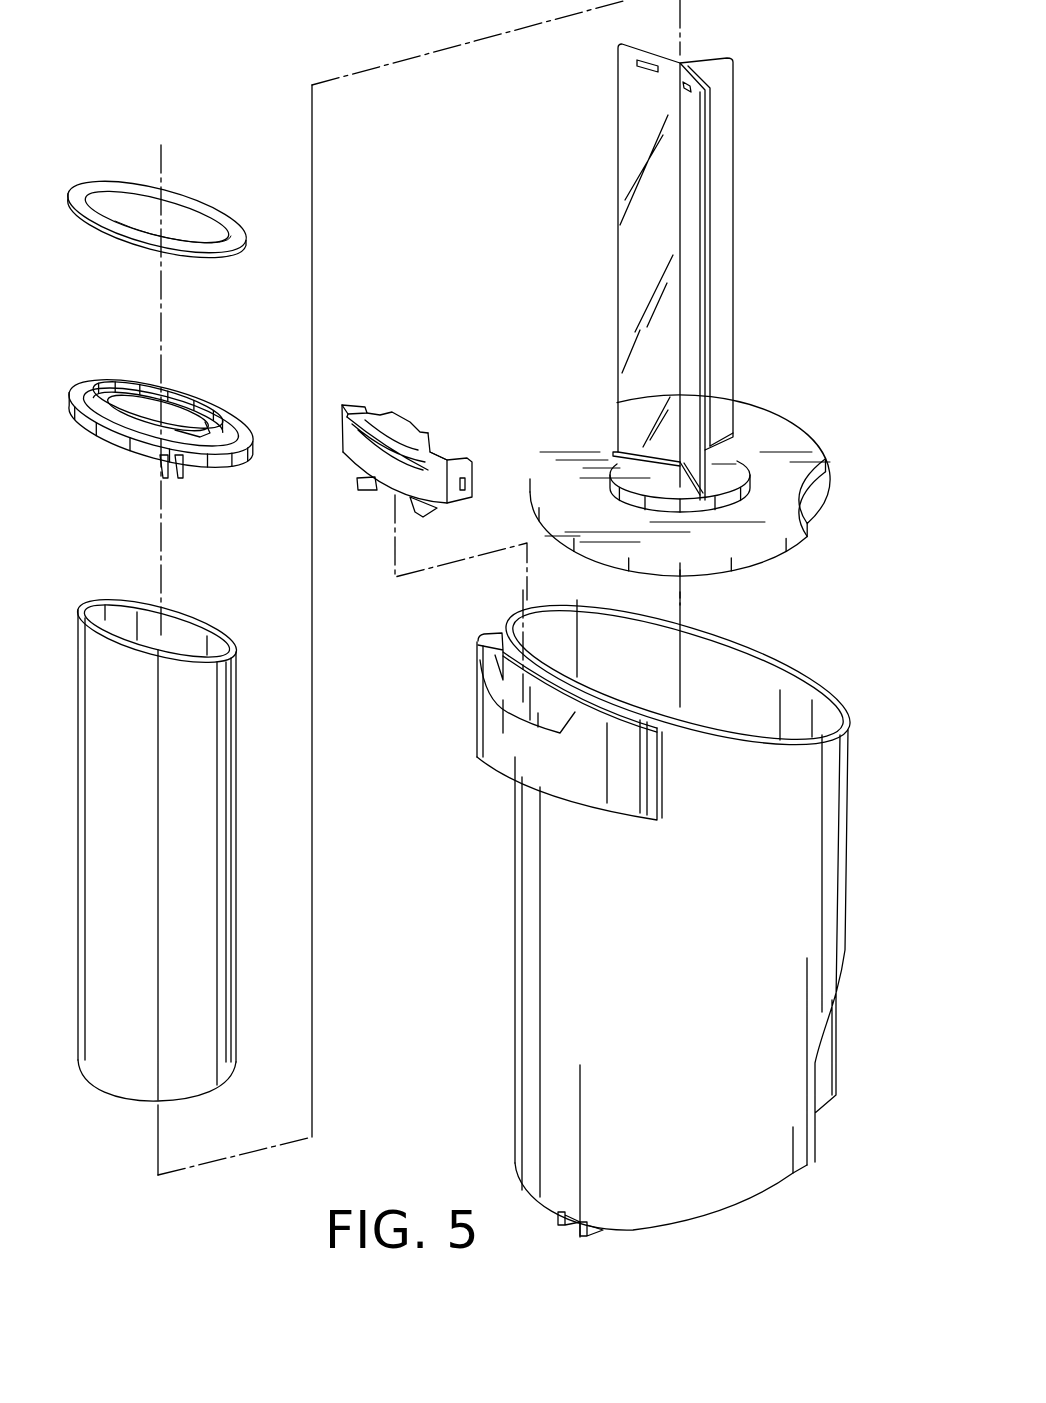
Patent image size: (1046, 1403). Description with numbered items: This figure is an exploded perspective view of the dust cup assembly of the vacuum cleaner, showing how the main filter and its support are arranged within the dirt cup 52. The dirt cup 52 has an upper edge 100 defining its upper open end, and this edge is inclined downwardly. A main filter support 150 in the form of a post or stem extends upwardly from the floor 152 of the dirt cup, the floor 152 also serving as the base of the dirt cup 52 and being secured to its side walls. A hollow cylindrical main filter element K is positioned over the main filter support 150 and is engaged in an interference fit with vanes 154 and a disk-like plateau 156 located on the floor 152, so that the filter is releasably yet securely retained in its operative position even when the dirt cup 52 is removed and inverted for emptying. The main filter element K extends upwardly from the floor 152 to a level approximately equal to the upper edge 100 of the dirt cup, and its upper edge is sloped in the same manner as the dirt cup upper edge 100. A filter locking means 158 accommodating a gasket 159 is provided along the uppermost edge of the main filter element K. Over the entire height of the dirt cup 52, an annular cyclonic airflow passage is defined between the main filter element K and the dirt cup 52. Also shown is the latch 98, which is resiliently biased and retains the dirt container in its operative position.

The gasket 159 is at (196, 198).
The filter locking means 158 is at (195, 395).
The main filter element K is at (240, 654).
The latch 98 is at (402, 473).
The vanes 154 is at (647, 252).
The main filter support 150 is at (715, 180).
The floor 152 is at (778, 423).
The disk-like plateau 156 is at (725, 480).
The upper edge 100 is at (790, 672).
The dirt cup 52 is at (543, 963).